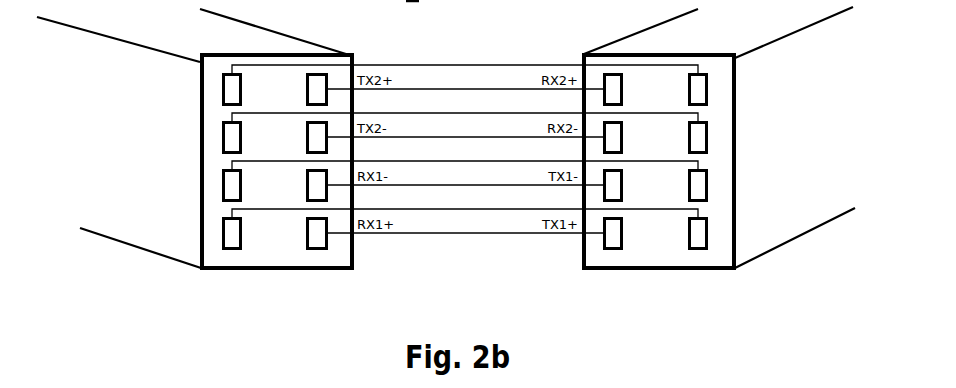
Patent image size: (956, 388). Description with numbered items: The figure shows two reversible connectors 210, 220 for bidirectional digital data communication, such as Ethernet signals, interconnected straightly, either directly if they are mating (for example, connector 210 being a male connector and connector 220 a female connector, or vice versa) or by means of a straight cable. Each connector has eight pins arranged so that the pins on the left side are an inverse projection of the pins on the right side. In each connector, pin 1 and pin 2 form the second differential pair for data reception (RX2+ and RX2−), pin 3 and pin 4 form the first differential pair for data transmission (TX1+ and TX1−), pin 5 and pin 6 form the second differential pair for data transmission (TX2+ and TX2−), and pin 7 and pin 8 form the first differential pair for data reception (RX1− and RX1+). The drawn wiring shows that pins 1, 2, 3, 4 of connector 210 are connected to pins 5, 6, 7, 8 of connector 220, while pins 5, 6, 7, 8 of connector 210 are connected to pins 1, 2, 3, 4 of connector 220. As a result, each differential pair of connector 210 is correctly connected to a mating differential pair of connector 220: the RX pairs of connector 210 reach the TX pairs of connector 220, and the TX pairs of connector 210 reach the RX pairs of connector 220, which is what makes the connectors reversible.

The reversible connector 210 is at (182, 353).
The reversible connector 220 is at (713, 350).
The pin 1 is at (435, 90).
The pin 2 is at (435, 138).
The pin 3 is at (435, 186).
The pin 4 is at (435, 234).
The pin 5 is at (509, 90).
The pin 6 is at (509, 138).
The pin 7 is at (509, 186).
The pin 8 is at (509, 234).